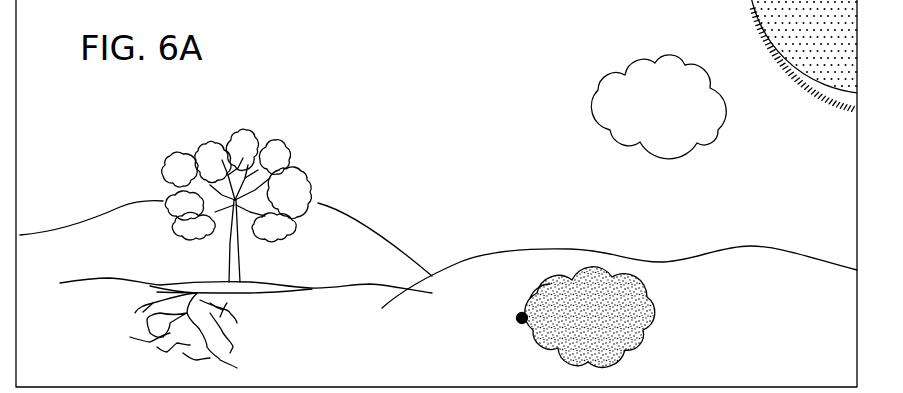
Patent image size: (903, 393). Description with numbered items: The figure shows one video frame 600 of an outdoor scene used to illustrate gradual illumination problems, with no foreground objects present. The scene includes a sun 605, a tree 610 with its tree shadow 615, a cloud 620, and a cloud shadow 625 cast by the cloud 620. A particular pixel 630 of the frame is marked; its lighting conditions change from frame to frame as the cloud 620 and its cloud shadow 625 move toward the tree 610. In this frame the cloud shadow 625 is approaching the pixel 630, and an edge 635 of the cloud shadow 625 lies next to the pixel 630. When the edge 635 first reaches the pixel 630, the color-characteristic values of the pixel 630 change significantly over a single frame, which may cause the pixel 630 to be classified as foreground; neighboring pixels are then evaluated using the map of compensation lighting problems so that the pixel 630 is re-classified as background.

The ground/environment 600 is at (386, 363).
The sun 605 is at (773, 18).
The tree 610 is at (284, 142).
The tree shadow 615 is at (150, 286).
The cloud 620 is at (708, 127).
The cloud shadow 625 is at (659, 294).
The pixel 630 is at (517, 321).
The edge 635 is at (530, 298).